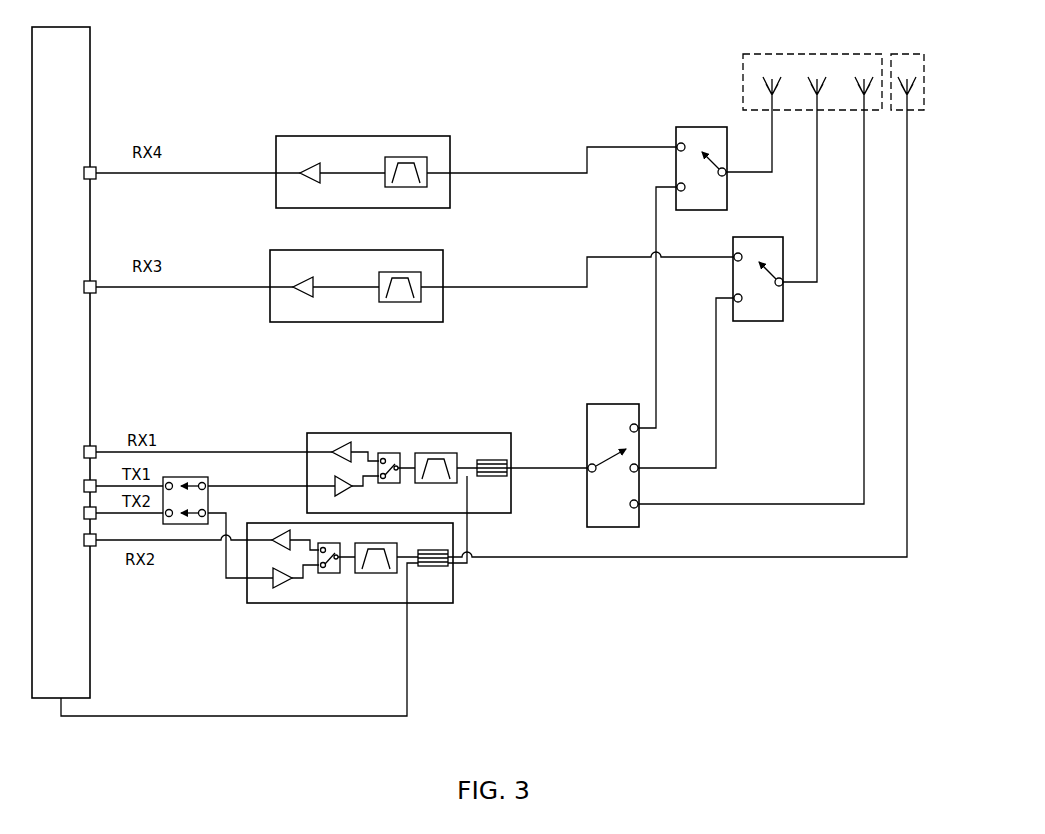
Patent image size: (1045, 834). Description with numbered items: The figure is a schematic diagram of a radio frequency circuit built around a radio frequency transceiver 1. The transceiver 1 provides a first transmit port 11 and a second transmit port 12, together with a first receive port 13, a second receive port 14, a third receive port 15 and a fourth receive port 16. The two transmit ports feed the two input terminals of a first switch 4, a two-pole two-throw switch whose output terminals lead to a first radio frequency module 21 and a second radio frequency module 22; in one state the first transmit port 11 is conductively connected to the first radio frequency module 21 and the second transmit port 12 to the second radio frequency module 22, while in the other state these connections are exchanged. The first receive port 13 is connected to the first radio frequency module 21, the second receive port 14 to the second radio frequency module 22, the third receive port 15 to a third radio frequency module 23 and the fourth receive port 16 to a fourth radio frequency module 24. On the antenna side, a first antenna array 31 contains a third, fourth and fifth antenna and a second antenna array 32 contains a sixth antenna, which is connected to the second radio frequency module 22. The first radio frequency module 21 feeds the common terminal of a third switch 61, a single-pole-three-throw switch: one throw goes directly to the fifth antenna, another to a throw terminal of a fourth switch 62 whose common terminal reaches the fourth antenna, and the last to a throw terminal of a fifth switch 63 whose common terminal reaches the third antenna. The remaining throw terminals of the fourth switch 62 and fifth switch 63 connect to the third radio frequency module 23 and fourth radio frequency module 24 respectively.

The radio frequency transceiver 1 is at (90, 78).
The first switch 4 is at (208, 485).
The first transmit port 11 is at (86, 484).
The second transmit port 12 is at (86, 512).
The first receive port 13 is at (86, 450).
The second receive port 14 is at (86, 541).
The third receive port 15 is at (86, 282).
The fourth receive port 16 is at (86, 168).
The first radio frequency module 21 is at (492, 433).
The second radio frequency module 22 is at (318, 603).
The third radio frequency module 23 is at (443, 252).
The fourth radio frequency module 24 is at (450, 138).
The first antenna array 31 is at (745, 75).
The second antenna array 32 is at (924, 75).
The third switch 61 is at (587, 430).
The fourth switch 62 is at (760, 322).
The fifth switch 63 is at (700, 127).